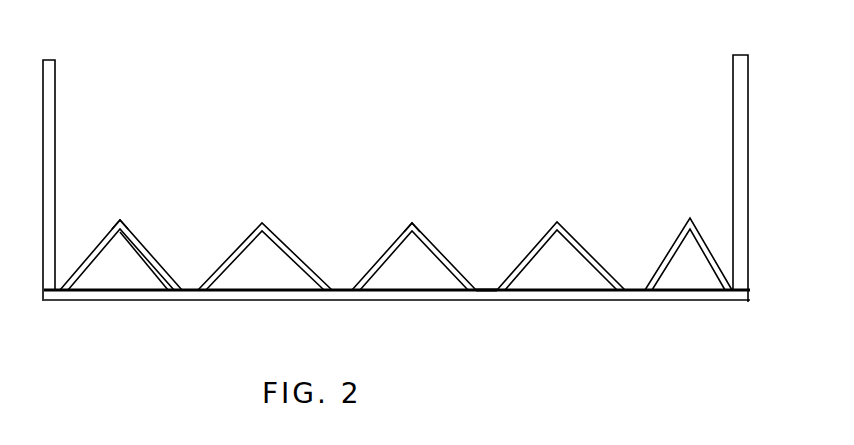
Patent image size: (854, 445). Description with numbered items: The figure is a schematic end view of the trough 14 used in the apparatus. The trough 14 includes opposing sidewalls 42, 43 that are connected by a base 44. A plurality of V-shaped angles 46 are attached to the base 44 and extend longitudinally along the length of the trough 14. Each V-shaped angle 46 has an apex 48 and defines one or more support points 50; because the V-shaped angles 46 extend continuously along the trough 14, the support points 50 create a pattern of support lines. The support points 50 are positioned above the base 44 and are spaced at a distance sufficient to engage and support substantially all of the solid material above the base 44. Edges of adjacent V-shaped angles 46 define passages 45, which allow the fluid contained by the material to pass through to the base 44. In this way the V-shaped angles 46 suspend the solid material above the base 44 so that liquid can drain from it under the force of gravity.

The trough 14 is at (140, 300).
The sidewall 42 is at (52, 108).
The sidewall 43 is at (740, 90).
The base 44 is at (495, 301).
The passages 45 is at (488, 268).
The V-shaped angle 46 is at (150, 257).
The apex 48 is at (278, 231).
The support point 50 is at (118, 226).